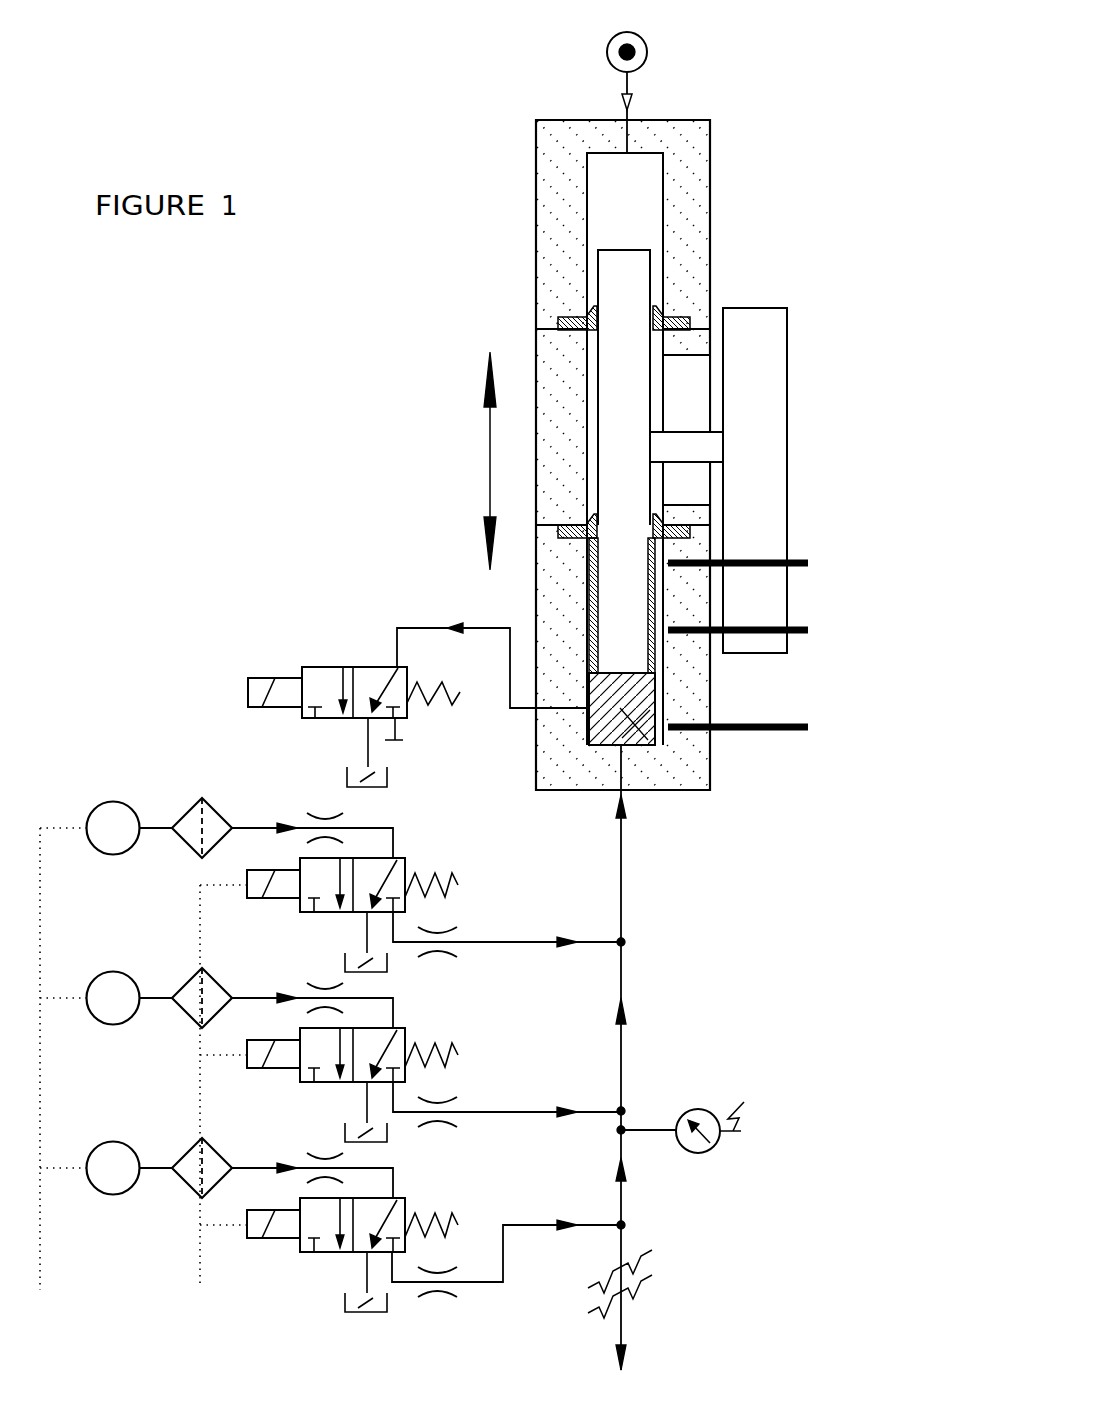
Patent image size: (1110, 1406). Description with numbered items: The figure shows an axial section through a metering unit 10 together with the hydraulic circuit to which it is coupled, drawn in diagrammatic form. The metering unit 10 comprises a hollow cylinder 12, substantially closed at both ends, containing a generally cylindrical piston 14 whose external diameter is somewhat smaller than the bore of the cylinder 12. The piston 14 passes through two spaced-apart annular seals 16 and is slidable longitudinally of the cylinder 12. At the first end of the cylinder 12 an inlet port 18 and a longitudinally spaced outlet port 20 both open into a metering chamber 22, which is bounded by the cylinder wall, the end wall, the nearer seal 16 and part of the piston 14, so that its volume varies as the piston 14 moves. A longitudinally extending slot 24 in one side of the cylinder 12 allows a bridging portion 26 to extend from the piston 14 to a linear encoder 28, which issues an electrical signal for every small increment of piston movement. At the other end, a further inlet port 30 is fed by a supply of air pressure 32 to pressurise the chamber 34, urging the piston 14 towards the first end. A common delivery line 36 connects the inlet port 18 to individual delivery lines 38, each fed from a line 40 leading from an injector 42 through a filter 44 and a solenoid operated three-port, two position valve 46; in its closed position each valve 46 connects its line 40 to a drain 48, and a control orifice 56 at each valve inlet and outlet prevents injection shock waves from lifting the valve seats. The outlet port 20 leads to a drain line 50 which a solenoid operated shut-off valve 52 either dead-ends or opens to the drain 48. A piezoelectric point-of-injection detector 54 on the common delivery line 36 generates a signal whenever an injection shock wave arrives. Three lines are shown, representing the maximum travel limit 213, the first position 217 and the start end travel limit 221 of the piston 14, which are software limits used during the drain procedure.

The metering unit 10 is at (755, 231).
The hollow cylinder 12 is at (573, 263).
The piston 14 is at (620, 612).
The annular seals 16 is at (567, 527).
The inlet port 18 is at (645, 790).
The outlet port 20 is at (587, 710).
The metering chamber 22 is at (653, 747).
The longitudinally extending slot 24 is at (683, 383).
The bridging portion 26 is at (690, 452).
The linear encoder 28 is at (747, 328).
The inlet port 30 is at (643, 133).
The supply of air pressure 32 is at (640, 43).
The chamber 34 is at (628, 200).
The common delivery line 36 is at (620, 1060).
The individual delivery lines 38 is at (505, 942).
The lines 40 is at (173, 820).
The injectors 42 is at (112, 818).
The filter 44 is at (220, 820).
The solenoid operated three-port, two position valve 46 is at (395, 877).
The drain 48 is at (363, 775).
The drain line 50 is at (410, 627).
The solenoid operated shut-off valve 52 is at (397, 680).
The piezoelectric point-of-injection detector 54 is at (710, 1151).
The control orifice 56 is at (330, 812).
The maximum travel limit line 213 is at (740, 563).
The first position line 217 is at (743, 627).
The start end travel limit line 221 is at (733, 723).